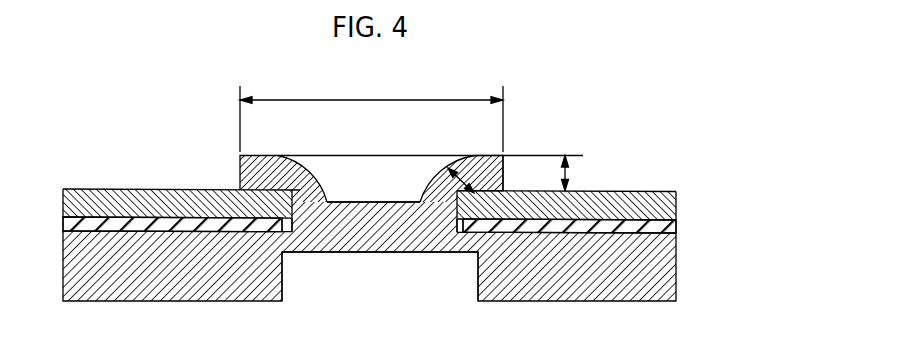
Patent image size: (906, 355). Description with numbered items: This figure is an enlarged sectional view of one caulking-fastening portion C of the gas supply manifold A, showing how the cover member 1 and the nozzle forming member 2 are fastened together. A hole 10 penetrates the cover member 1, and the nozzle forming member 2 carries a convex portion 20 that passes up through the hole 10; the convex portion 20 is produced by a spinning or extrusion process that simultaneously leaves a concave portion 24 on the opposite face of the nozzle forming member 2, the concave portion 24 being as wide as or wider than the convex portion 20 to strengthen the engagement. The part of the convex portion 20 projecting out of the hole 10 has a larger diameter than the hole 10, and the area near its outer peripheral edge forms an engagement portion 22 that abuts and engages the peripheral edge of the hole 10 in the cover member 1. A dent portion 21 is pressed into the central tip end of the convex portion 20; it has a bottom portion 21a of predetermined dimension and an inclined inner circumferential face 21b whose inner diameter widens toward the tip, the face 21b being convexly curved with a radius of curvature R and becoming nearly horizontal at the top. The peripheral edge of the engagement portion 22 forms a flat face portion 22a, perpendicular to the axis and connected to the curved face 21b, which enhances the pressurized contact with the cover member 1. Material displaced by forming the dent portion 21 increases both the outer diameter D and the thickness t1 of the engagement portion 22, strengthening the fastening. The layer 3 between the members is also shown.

The cover member 1 is at (638, 191).
The nozzle forming member 2 is at (547, 288).
The intermediate layer 3 is at (677, 227).
The hole 10 is at (313, 182).
The convex portion 20 is at (368, 216).
The dent portion 21 is at (370, 155).
The bottom portion 21a is at (387, 201).
The inclined inner circumferential face 21b is at (430, 182).
The engagement portion 22 is at (495, 179).
The flat face portion 22a is at (490, 156).
The concave portion 24 is at (408, 273).
The gas supply manifold A is at (182, 83).
The caulking-fastening portion C is at (222, 137).
The outer diameter D is at (371, 113).
The radius of curvature R is at (475, 155).
The thickness t1 is at (566, 174).